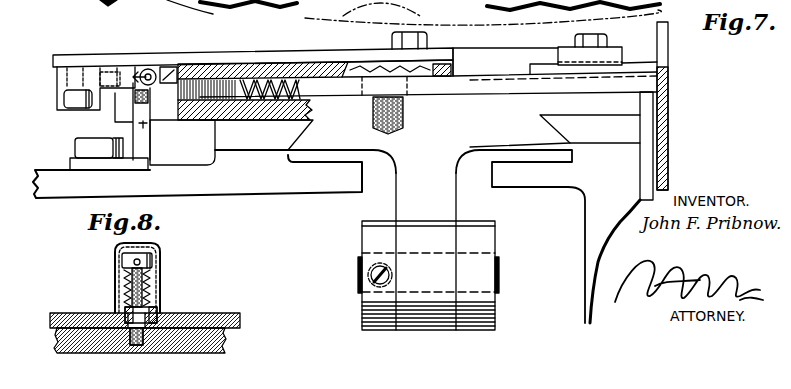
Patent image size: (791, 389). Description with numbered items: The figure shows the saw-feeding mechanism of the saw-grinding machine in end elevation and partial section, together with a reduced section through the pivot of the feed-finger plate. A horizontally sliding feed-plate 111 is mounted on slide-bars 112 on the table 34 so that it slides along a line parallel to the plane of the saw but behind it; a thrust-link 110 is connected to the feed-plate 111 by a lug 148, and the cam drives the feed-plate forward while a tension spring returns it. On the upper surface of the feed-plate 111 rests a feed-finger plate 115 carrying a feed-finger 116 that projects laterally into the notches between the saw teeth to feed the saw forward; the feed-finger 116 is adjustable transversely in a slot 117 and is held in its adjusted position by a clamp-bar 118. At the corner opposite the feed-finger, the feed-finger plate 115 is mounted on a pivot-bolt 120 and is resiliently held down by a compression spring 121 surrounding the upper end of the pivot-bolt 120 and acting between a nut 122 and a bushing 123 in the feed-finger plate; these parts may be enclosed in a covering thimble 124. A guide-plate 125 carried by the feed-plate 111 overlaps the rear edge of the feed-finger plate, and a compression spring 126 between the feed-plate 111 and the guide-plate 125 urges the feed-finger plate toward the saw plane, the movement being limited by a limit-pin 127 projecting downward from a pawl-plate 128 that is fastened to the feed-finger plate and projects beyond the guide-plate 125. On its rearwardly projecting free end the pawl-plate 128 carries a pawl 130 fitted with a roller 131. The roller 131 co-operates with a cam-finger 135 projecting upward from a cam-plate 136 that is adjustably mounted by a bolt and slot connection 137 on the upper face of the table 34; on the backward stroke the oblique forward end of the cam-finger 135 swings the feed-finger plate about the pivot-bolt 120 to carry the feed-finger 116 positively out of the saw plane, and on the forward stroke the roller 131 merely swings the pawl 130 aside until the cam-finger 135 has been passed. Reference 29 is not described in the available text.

In FIG. 7, the frame standard 29 is at (669, 136).
In FIG. 7, the table 34 is at (197, 176).
In FIG. 7, the thrust-link 110 is at (496, 308).
In FIG. 7, the feed-plate 111 is at (173, 150).
In FIG. 8, the feed-plate 111 is at (227, 335).
In FIG. 7, the slide-bars 112 is at (420, 132).
In FIG. 7, the feed-finger plate 115 is at (452, 80).
In FIG. 8, the feed-finger plate 115 is at (242, 316).
In FIG. 7, the feed-finger 116 is at (634, 62).
In FIG. 7, the slot 117 is at (508, 74).
In FIG. 7, the clamp-bar 118 is at (562, 52).
In FIG. 8, the pivot-bolt 120 is at (160, 297).
In FIG. 8, the compression spring 121 is at (152, 270).
In FIG. 8, the nut 122 is at (160, 247).
In FIG. 8, the bushing 123 is at (160, 308).
In FIG. 8, the covering thimble 124 is at (115, 270).
In FIG. 7, the guide-plate 125 is at (328, 62).
In FIG. 7, the compression spring 126 is at (274, 63).
In FIG. 7, the limit-pin 127 is at (182, 63).
In FIG. 7, the pawl-plate 128 is at (143, 55).
In FIG. 7, the pawl 130 is at (57, 78).
In FIG. 7, the roller 131 is at (118, 112).
In FIG. 7, the cam-finger 135 is at (143, 129).
In FIG. 7, the cam-plate 136 is at (72, 162).
In FIG. 7, the bolt and slot connection 137 is at (78, 143).
In FIG. 7, the lug 148 is at (426, 251).